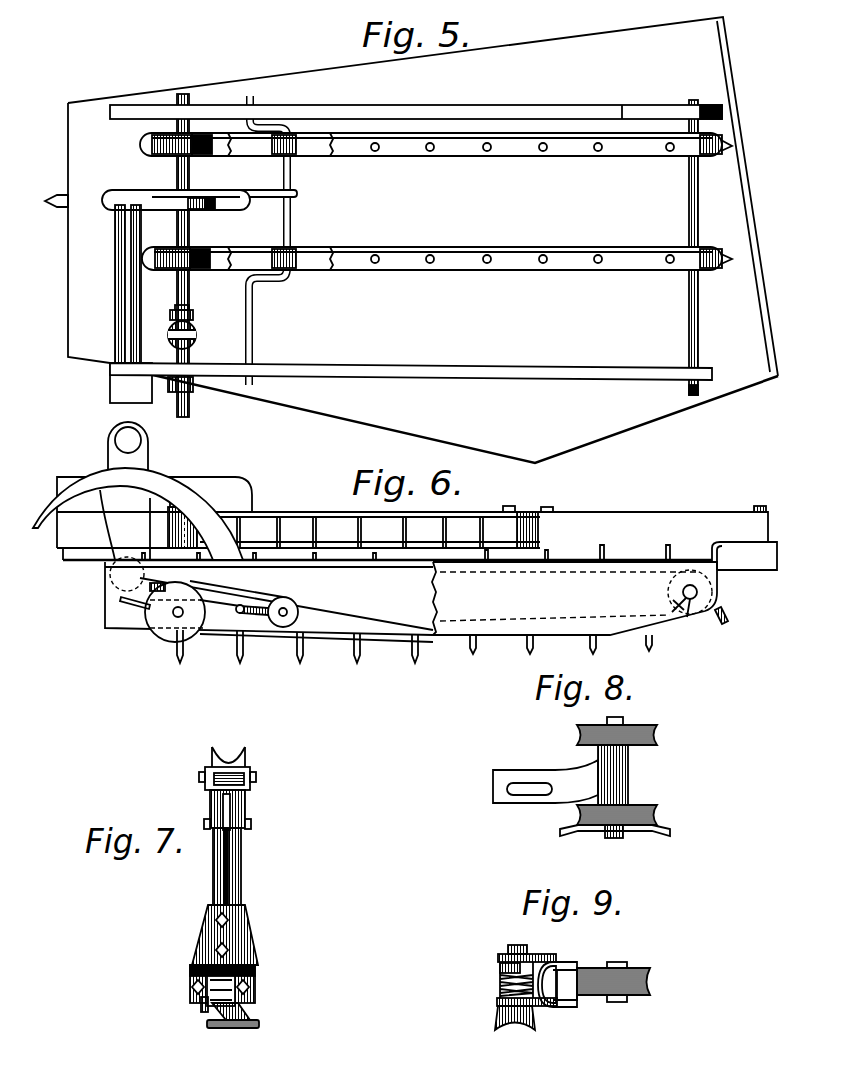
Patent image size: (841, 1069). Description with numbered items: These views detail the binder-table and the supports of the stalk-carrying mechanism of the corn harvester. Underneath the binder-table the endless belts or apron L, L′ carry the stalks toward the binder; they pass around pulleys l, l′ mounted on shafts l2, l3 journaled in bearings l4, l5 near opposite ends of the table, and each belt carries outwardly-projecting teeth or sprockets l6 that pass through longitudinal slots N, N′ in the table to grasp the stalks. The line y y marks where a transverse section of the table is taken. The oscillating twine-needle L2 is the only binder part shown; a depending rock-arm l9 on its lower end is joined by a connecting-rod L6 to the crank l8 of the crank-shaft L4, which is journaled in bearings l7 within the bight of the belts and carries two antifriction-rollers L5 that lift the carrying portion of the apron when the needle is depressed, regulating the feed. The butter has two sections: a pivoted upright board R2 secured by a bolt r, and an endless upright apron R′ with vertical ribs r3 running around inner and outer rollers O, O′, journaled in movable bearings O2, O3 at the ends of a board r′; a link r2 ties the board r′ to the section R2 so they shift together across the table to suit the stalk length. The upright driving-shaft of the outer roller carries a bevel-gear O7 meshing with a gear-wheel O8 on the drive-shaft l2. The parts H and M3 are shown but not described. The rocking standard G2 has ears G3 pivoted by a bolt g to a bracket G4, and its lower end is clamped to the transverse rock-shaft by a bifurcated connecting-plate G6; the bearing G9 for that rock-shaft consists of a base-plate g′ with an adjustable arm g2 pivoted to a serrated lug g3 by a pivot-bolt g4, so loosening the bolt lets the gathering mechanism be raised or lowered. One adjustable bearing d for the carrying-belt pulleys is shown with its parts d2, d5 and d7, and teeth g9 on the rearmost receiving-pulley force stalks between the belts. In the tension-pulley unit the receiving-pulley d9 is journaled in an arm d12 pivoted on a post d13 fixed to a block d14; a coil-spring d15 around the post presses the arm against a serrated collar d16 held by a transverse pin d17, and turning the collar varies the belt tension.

In FIG. 5, the section line y is at (180, 253).
In FIG. 5, the pulley l is at (150, 143).
In FIG. 5, the pulley l′ is at (719, 156).
In FIG. 6, the pulley l′ is at (722, 599).
In FIG. 5, the shaft l2 is at (176, 358).
In FIG. 6, the shaft l2 is at (175, 612).
In FIG. 5, the shaft l3 is at (689, 332).
In FIG. 6, the shaft l3 is at (709, 622).
In FIG. 5, the bearing l4 is at (688, 110).
In FIG. 6, the bearing l4 is at (672, 618).
In FIG. 5, the bearing l5 is at (192, 110).
In FIG. 6, the teeth or sprockets l6 is at (601, 550).
In FIG. 5, the bearings l7 is at (252, 108).
In FIG. 5, the crank portion l8 is at (289, 177).
In FIG. 5, the depending rock-arm l9 is at (163, 205).
In FIG. 6, the depending rock-arm l9 is at (125, 597).
In FIG. 5, the endless belt L is at (437, 259).
In FIG. 5, the endless belt L′ is at (451, 157).
In FIG. 6, the endless belt L′ is at (383, 628).
In FIG. 5, the oscillating twine-needle L2 is at (127, 198).
In FIG. 6, the oscillating twine-needle L2 is at (55, 508).
In FIG. 5, the crank-shaft L4 is at (253, 308).
In FIG. 6, the crank-shaft L4 is at (272, 607).
In FIG. 5, the antifriction-rollers L5 is at (291, 130).
In FIG. 6, the antifriction-rollers L5 is at (299, 610).
In FIG. 5, the connecting-rod L6 is at (224, 205).
In FIG. 6, the connecting-rod L6 is at (245, 617).
In FIG. 5, the longitudinal slot N is at (423, 240).
In FIG. 5, the longitudinal slot N′ is at (538, 165).
In FIG. 5, the plate H is at (452, 329).
In FIG. 6, the inner supporting-roller O is at (520, 514).
In FIG. 6, the outer supporting-roller O′ is at (167, 532).
In FIG. 6, the movable bearing O2 is at (187, 518).
In FIG. 6, the movable bearing O3 is at (522, 562).
In FIG. 5, the bevel-gear O7 is at (197, 337).
In FIG. 5, the gear-wheel O8 is at (172, 315).
In FIG. 5, the collar M3 is at (193, 393).
In FIG. 6, the butter-section R′ is at (296, 523).
In FIG. 6, the butter-section R2 is at (645, 514).
In FIG. 6, the bolt r is at (759, 498).
In FIG. 6, the board r′ is at (445, 520).
In FIG. 6, the link r2 is at (529, 491).
In FIG. 6, the vertical ribs r3 is at (329, 529).
In FIG. 7, the rocking standard G2 is at (244, 866).
In FIG. 7, the ears G3 is at (246, 806).
In FIG. 7, the bracket G4 is at (230, 746).
In FIG. 7, the bifurcated connecting-plate G6 is at (250, 932).
In FIG. 7, the bearing G9 is at (272, 988).
In FIG. 7, the bolt g is at (253, 778).
In FIG. 7, the base-plate g′ is at (225, 1029).
In FIG. 7, the adjustable arm g2 is at (195, 968).
In FIG. 7, the lug g3 is at (248, 1009).
In FIG. 7, the pivot-bolt g4 is at (201, 1005).
In FIG. 8, the sprockets or teeth g9 is at (665, 836).
In FIG. 8, the bearing d is at (628, 778).
In FIG. 8, the arm d2 is at (547, 771).
In FIG. 8, the upper flange d5 is at (641, 730).
In FIG. 8, the lower flange d7 is at (653, 813).
In FIG. 9, the receiving-pulley d9 is at (654, 983).
In FIG. 9, the arm d12 is at (577, 962).
In FIG. 9, the post d13 is at (520, 955).
In FIG. 9, the block d14 is at (498, 1012).
In FIG. 9, the coil-spring d15 is at (500, 980).
In FIG. 9, the serrated collar d16 is at (500, 964).
In FIG. 9, the transverse pin d17 is at (503, 950).